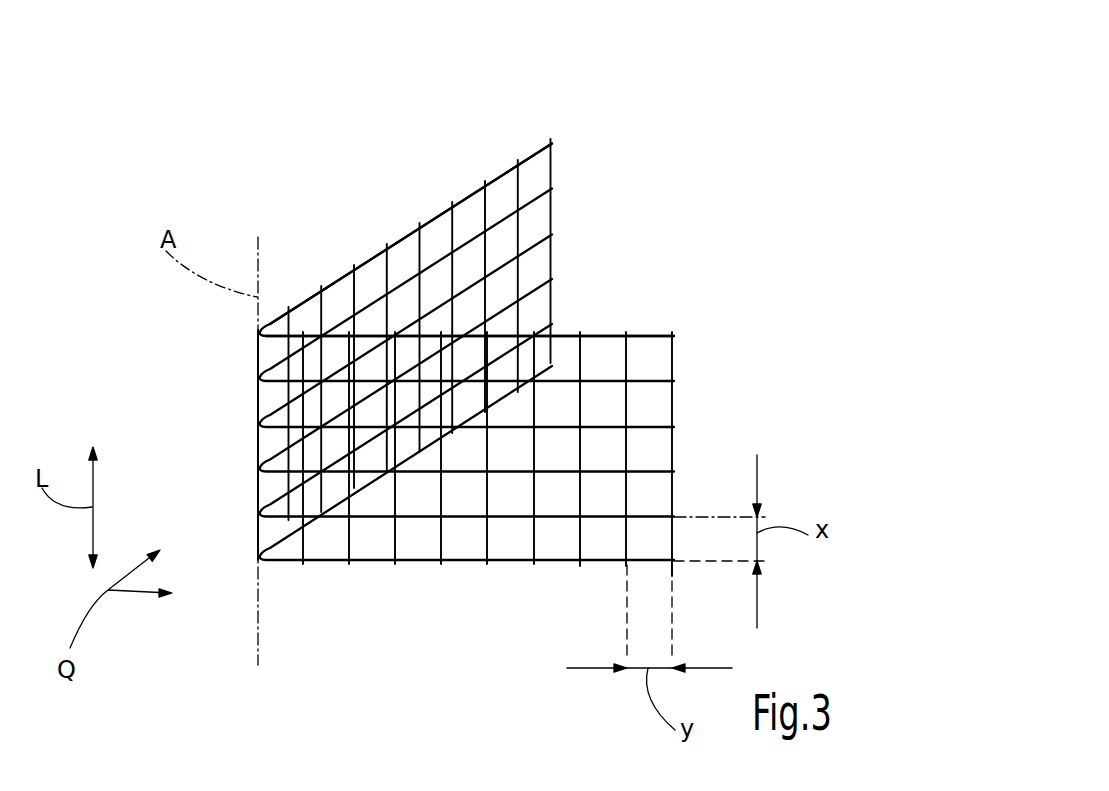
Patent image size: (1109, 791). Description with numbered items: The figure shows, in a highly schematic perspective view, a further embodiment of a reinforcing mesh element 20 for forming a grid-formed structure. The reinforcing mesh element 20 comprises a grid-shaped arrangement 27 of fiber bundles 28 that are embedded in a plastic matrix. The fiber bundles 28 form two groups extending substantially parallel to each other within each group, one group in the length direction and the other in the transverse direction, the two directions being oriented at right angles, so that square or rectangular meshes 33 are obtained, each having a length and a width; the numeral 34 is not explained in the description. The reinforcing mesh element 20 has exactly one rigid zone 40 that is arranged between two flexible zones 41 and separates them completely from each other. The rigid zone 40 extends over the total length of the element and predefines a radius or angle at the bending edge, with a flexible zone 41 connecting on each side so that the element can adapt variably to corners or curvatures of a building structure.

The reinforcing mesh element 20 is at (461, 342).
The grid-shaped arrangement 27 is at (388, 206).
The fiber bundles 28 is at (353, 290).
The meshes 33 is at (503, 195).
The transverse wire 34 is at (350, 520).
The rigid zone 40 is at (240, 362).
The flexible zones 41 is at (533, 135).